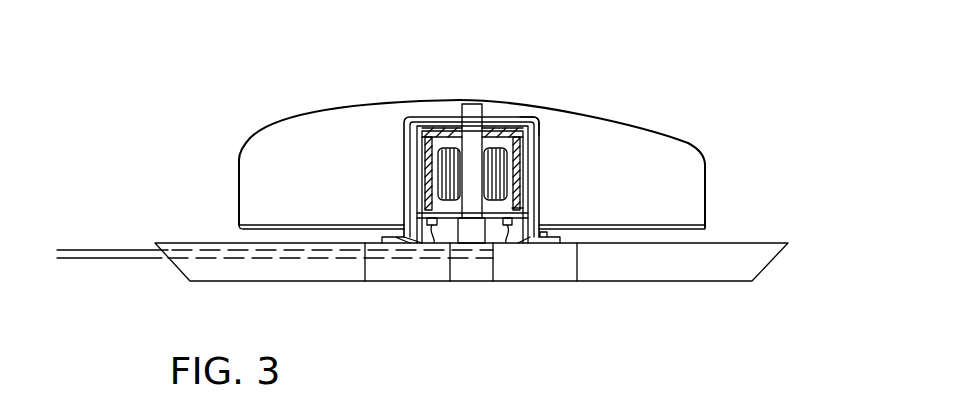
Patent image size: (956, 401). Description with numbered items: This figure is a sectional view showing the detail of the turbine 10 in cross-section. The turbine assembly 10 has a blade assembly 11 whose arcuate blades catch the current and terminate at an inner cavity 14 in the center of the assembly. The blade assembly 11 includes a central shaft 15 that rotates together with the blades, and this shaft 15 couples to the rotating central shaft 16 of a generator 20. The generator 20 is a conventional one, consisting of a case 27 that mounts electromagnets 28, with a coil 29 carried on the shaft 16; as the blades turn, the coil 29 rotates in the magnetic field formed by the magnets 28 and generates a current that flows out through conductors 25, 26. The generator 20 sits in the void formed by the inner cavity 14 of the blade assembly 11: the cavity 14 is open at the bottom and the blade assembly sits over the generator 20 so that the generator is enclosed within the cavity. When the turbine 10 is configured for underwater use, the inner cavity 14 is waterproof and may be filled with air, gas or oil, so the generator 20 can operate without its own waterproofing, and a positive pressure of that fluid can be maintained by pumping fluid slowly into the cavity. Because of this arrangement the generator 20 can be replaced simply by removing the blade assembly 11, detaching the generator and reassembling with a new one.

The turbine assembly 10 is at (703, 140).
The blade assembly 11 is at (472, 164).
The inner cavity 14 is at (404, 162).
The central shaft 15 is at (470, 103).
The rotating central shaft 16 is at (472, 143).
The generator 20 is at (534, 118).
The conductor 25 is at (85, 250).
The conductor 26 is at (85, 260).
The case 27 is at (512, 208).
The electromagnets 28 is at (428, 135).
The coil 29 is at (507, 173).